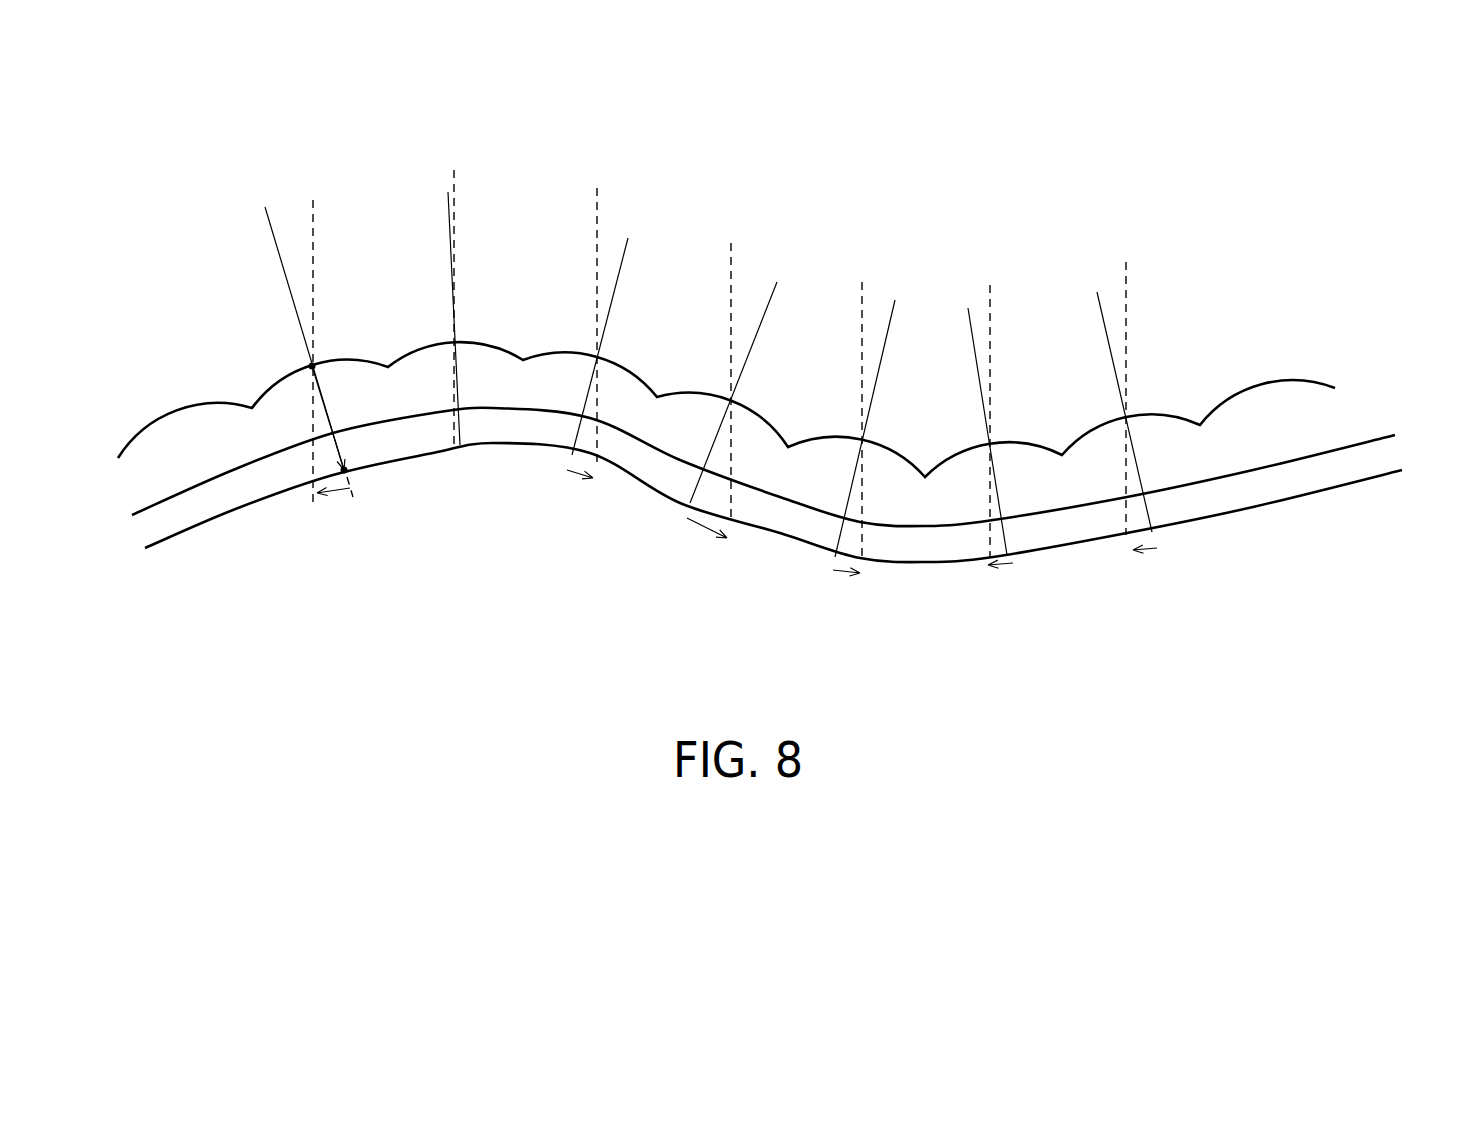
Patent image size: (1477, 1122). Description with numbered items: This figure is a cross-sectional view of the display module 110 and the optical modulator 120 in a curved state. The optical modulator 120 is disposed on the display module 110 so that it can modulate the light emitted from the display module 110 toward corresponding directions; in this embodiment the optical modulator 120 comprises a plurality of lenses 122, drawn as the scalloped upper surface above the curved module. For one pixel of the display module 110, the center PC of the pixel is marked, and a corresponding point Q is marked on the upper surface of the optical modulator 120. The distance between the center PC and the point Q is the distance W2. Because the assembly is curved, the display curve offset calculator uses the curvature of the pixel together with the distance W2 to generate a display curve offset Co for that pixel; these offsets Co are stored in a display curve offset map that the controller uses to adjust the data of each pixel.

The display module 110 is at (1342, 475).
The optical modulator 120 is at (1315, 430).
The lenses 122 is at (153, 437).
The point on the upper surface of the optical modulator Q is at (325, 351).
The center of the pixel PC is at (350, 472).
The distance W2 is at (342, 418).
The display curve offset Co is at (345, 497).